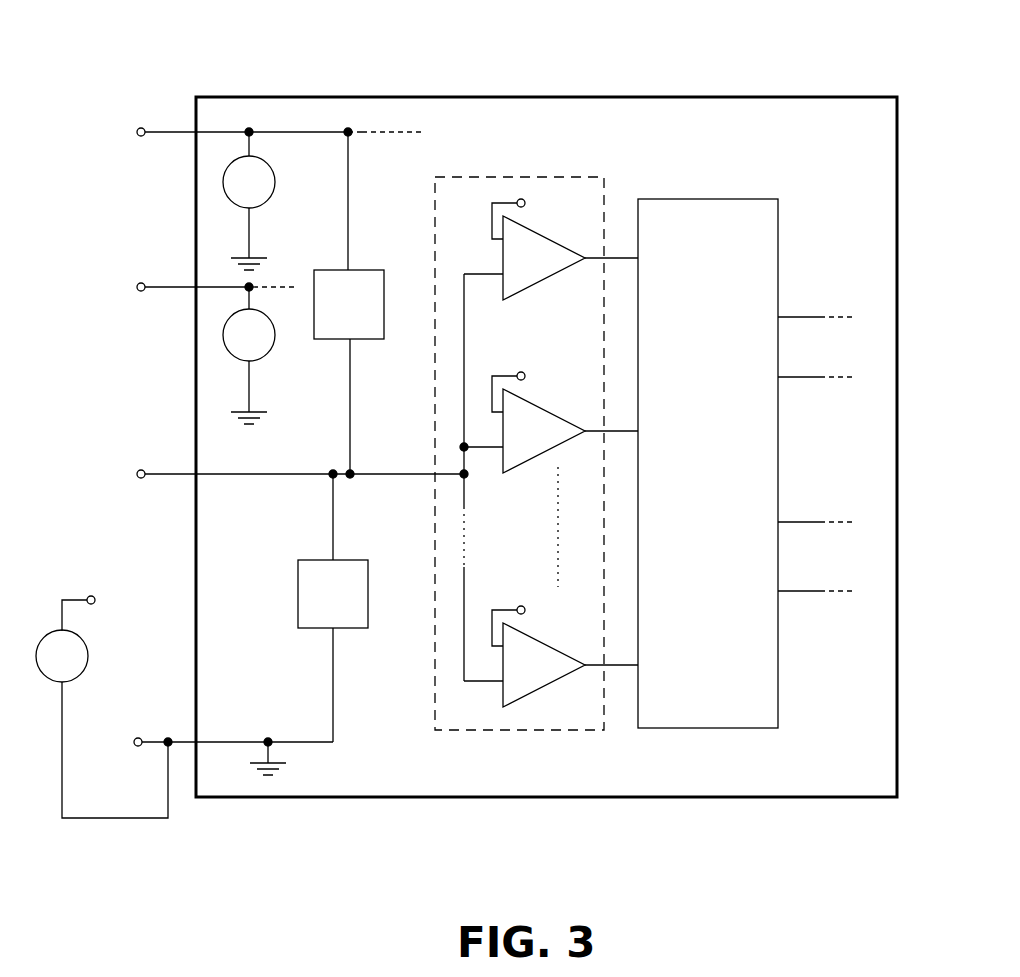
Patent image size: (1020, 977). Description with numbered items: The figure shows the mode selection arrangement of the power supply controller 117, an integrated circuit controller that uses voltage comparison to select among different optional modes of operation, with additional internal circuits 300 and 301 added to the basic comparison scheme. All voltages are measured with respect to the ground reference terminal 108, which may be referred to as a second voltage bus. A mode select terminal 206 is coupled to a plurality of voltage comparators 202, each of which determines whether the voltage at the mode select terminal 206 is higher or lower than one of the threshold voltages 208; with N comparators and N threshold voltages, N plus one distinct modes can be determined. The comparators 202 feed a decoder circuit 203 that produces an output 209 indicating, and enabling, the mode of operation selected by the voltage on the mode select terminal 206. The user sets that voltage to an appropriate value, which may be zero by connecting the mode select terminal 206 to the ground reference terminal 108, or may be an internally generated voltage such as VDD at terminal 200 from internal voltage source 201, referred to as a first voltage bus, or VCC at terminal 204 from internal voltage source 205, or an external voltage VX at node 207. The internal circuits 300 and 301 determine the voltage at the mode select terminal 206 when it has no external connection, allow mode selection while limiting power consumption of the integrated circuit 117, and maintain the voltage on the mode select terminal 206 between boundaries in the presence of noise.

The power supply controller 117 is at (516, 96).
The VDD terminal 200 is at (140, 122).
The internal voltage source 201 is at (282, 183).
The voltage comparators 202 is at (518, 175).
The decoder circuit 203 is at (715, 197).
The VCC terminal 204 is at (140, 272).
The internal voltage source 205 is at (280, 345).
The mode select terminal 206 is at (140, 460).
The node VX 207 is at (97, 590).
The threshold voltages 208 is at (525, 598).
The output 209 is at (820, 448).
The internal circuit 300 is at (358, 268).
The internal circuit 301 is at (320, 558).
The ground reference terminal 108 is at (138, 728).